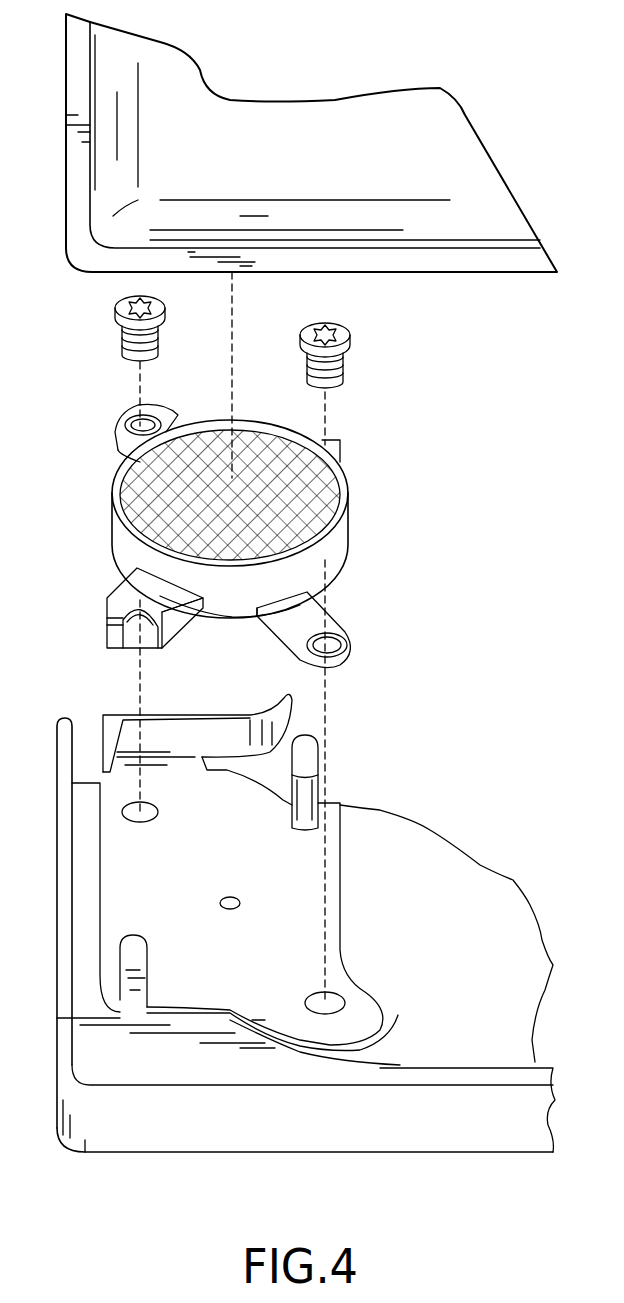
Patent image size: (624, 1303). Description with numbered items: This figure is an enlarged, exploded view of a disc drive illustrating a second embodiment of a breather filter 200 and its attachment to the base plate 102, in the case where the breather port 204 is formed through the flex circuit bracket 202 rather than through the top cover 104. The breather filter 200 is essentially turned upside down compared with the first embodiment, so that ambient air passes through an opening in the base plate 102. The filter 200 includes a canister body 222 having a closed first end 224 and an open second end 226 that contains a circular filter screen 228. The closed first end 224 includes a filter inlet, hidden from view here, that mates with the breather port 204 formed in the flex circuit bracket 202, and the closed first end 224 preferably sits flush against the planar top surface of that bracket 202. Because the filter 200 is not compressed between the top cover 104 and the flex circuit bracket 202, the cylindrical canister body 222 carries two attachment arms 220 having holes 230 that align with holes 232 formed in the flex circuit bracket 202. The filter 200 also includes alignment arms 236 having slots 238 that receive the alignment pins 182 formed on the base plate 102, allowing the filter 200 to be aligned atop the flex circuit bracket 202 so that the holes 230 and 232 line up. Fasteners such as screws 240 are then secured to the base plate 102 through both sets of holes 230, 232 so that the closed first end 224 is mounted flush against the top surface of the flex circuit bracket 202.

The base plate 102 is at (455, 1133).
The top cover 104 is at (458, 118).
The alignment pins 182 is at (308, 752).
The breather filter 200 is at (395, 492).
The flex circuit bracket 202 is at (337, 907).
The breather port 204 is at (228, 896).
The attachment arms 220 is at (168, 414).
The canister body 222 is at (340, 533).
The closed first end 224 is at (228, 620).
The open second end 226 is at (115, 470).
The filter screen 228 is at (332, 487).
The holes 230 is at (332, 648).
The holes 232 is at (345, 1000).
The alignment arms 236 is at (118, 593).
The slots 238 is at (133, 608).
The screws 240 is at (350, 335).